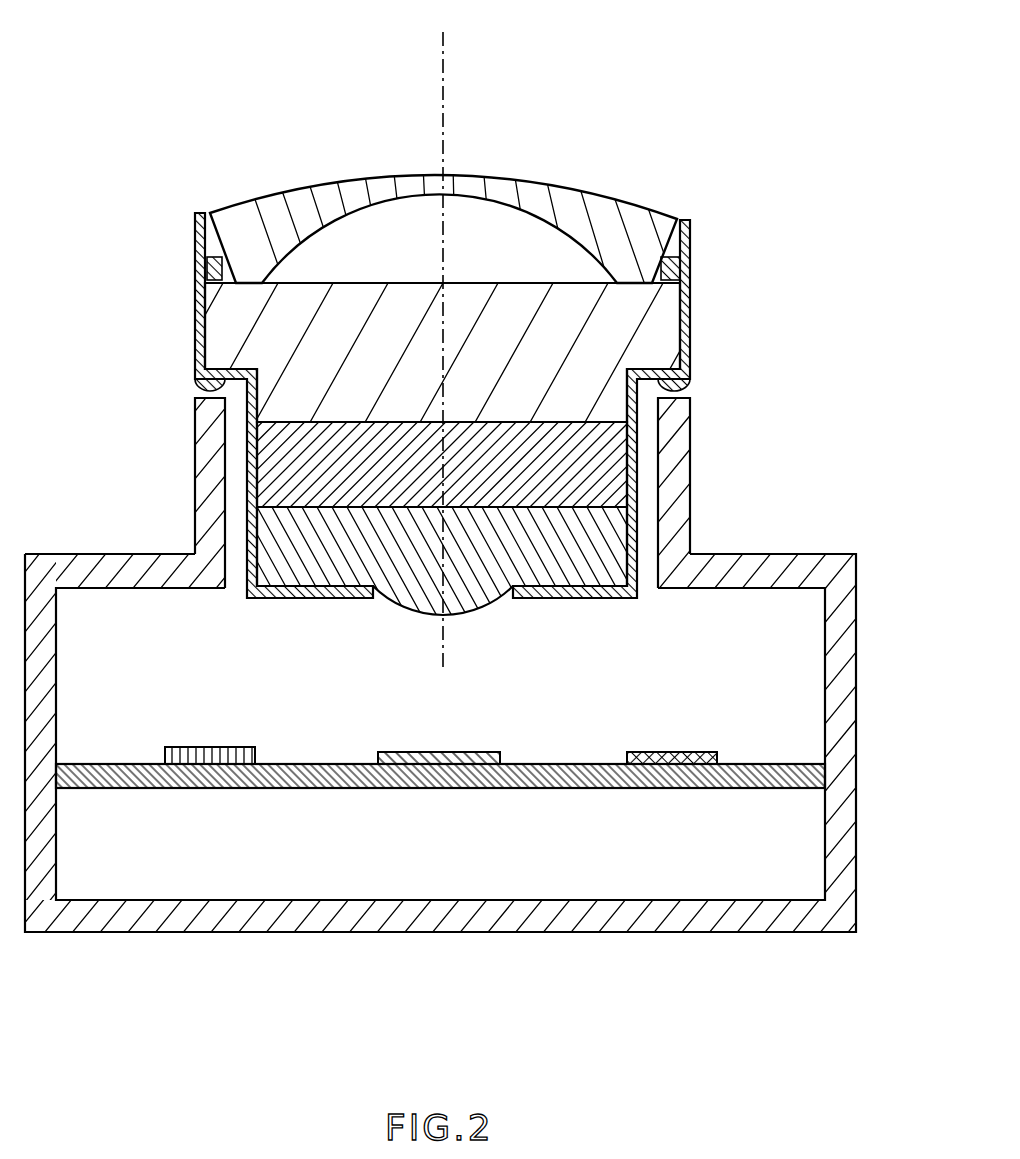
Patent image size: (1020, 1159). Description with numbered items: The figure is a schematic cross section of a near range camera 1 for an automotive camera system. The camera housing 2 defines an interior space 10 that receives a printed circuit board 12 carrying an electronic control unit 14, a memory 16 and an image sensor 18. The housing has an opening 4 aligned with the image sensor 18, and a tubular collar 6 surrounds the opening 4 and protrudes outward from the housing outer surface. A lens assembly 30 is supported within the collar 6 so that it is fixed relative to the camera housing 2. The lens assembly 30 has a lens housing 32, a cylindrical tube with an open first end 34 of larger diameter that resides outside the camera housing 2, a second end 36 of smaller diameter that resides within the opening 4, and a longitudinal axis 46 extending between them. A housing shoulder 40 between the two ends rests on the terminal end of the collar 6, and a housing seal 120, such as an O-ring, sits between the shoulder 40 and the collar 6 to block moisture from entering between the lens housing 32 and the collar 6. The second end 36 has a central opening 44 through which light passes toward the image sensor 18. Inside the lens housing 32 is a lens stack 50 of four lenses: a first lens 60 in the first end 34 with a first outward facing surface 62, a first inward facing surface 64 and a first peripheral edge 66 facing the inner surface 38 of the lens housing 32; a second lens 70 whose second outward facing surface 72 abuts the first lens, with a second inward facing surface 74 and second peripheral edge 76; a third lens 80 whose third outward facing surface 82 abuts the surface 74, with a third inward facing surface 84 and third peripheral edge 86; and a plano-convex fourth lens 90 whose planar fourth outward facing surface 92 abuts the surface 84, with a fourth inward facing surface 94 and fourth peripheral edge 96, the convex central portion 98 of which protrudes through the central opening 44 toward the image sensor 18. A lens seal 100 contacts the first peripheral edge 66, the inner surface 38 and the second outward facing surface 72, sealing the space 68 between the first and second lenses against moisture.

The near range camera 1 is at (150, 58).
The camera housing 2 is at (848, 648).
The opening 4 is at (648, 600).
The tubular collar 6 is at (200, 515).
The interior space 10 is at (468, 863).
The printed circuit board 12 is at (766, 790).
The electronic control unit 14 is at (206, 745).
The memory 16 is at (680, 752).
The image sensor 18 is at (448, 752).
The lens assembly 30 is at (782, 284).
The lens housing 32 is at (640, 480).
The first end 34 is at (693, 222).
The second end 36 is at (247, 595).
The inner surface 38 is at (216, 214).
The housing shoulder 40 is at (204, 344).
The central opening 44 is at (494, 606).
The longitudinal axis 46 is at (448, 48).
The lens stack 50 is at (706, 164).
The first lens 60 is at (292, 202).
The first outward facing surface 62 is at (366, 176).
The first inward facing surface 64 is at (520, 196).
The first peripheral edge 66 is at (200, 252).
The space 68 is at (502, 241).
The second lens 70 is at (216, 312).
The second outward facing surface 72 is at (372, 282).
The second inward facing surface 74 is at (250, 410).
The second peripheral edge 76 is at (693, 308).
The third lens 80 is at (282, 444).
The third outward facing surface 82 is at (220, 386).
The third inward facing surface 84 is at (255, 484).
The third peripheral edge 86 is at (640, 446).
The fourth lens 90 is at (318, 572).
The fourth outward facing surface 92 is at (630, 508).
The fourth inward facing surface 94 is at (606, 600).
The fourth peripheral edge 96 is at (640, 542).
The central portion 98 is at (394, 610).
The lens seal 100 is at (692, 262).
The housing seal 120 is at (692, 388).